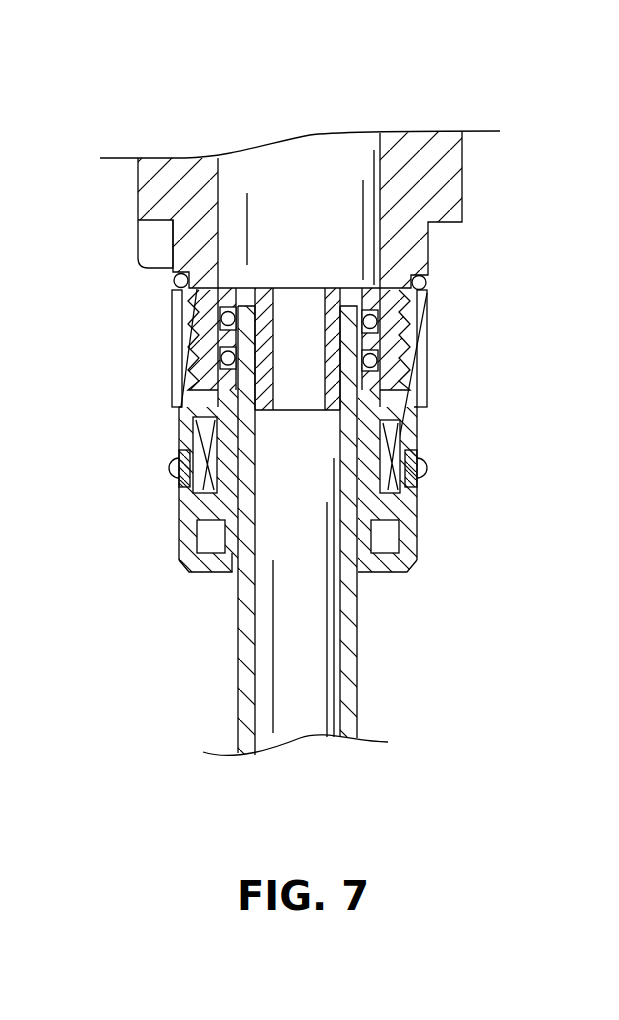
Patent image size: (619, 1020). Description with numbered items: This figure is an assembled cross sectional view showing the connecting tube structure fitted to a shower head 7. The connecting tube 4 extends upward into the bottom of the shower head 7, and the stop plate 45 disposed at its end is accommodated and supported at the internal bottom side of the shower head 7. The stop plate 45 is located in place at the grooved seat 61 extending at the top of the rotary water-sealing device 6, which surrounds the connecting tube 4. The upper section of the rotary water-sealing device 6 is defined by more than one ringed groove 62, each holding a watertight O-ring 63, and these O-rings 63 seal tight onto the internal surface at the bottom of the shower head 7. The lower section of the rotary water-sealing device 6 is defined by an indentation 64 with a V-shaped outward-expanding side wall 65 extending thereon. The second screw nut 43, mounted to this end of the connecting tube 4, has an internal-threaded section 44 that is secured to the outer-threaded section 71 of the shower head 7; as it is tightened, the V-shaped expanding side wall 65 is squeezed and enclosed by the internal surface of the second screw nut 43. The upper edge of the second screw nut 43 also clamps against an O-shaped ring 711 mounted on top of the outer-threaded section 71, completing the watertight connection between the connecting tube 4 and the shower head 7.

The connecting tube 4 is at (358, 663).
The second screw nut 43 is at (418, 552).
The internal-threaded section 44 is at (412, 362).
The stop plate 45 is at (266, 290).
The rotary water-sealing device 6 is at (400, 507).
The grooved seat 61 is at (422, 297).
The ringed groove 62 is at (216, 290).
The watertight O-ring 63 is at (183, 320).
The indentation 64 is at (215, 470).
The V-shaped outward-expanding side wall 65 is at (197, 462).
The shower head 7 is at (463, 183).
The outer-threaded section 71 is at (175, 370).
The O-shaped ring 711 is at (173, 285).